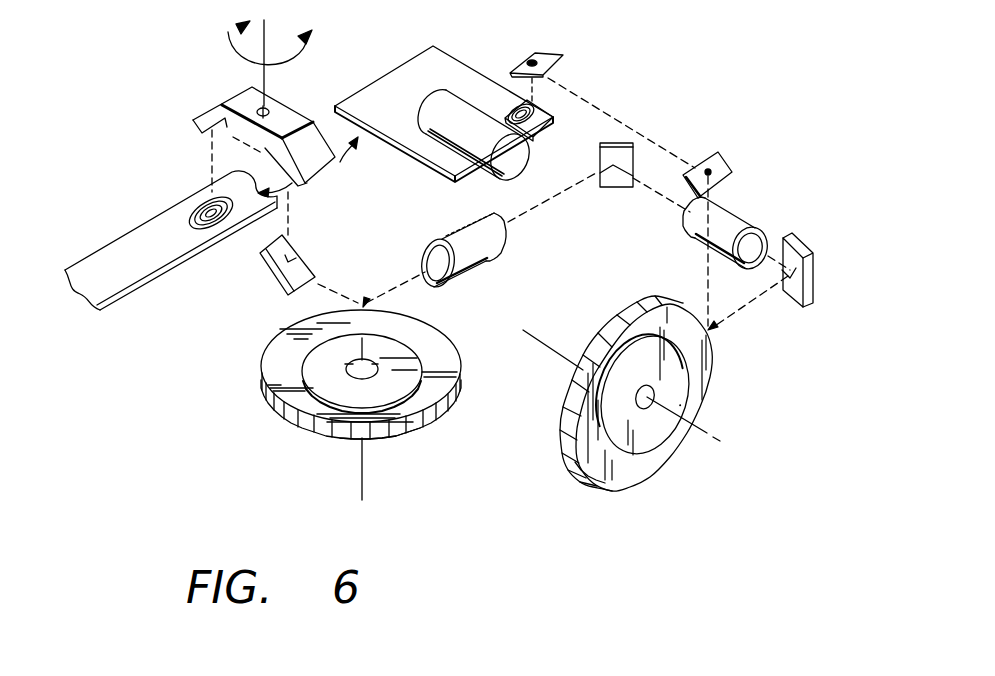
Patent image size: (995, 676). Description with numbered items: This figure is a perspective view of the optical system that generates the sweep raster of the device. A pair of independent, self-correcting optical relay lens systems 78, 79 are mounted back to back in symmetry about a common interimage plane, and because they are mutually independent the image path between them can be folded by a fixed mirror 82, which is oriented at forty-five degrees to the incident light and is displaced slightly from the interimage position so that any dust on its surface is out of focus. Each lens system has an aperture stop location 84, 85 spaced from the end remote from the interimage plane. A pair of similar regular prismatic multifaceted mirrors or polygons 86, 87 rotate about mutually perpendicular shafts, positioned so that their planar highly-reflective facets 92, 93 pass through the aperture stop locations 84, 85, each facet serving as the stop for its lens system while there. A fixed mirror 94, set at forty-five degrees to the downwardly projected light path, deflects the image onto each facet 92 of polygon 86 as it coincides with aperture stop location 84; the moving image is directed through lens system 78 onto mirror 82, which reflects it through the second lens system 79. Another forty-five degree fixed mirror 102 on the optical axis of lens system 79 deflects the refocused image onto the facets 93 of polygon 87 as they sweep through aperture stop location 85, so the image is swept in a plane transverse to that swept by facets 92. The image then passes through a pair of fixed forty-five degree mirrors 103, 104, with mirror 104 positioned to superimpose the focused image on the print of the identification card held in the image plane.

The optical relay lens system 78 is at (478, 267).
The optical relay lens system 79 is at (728, 223).
The fixed mirror 82 is at (614, 143).
The aperture stop location 84 is at (365, 300).
The aperture stop location 85 is at (713, 333).
The polygon 86 is at (261, 376).
The polygon 87 is at (702, 407).
The facets 92 is at (415, 427).
The facets 93 is at (562, 450).
The fixed mirror 94 is at (270, 263).
The fixed mirror 102 is at (813, 280).
The fixed mirror 103 is at (731, 172).
The fixed mirror 104 is at (545, 53).